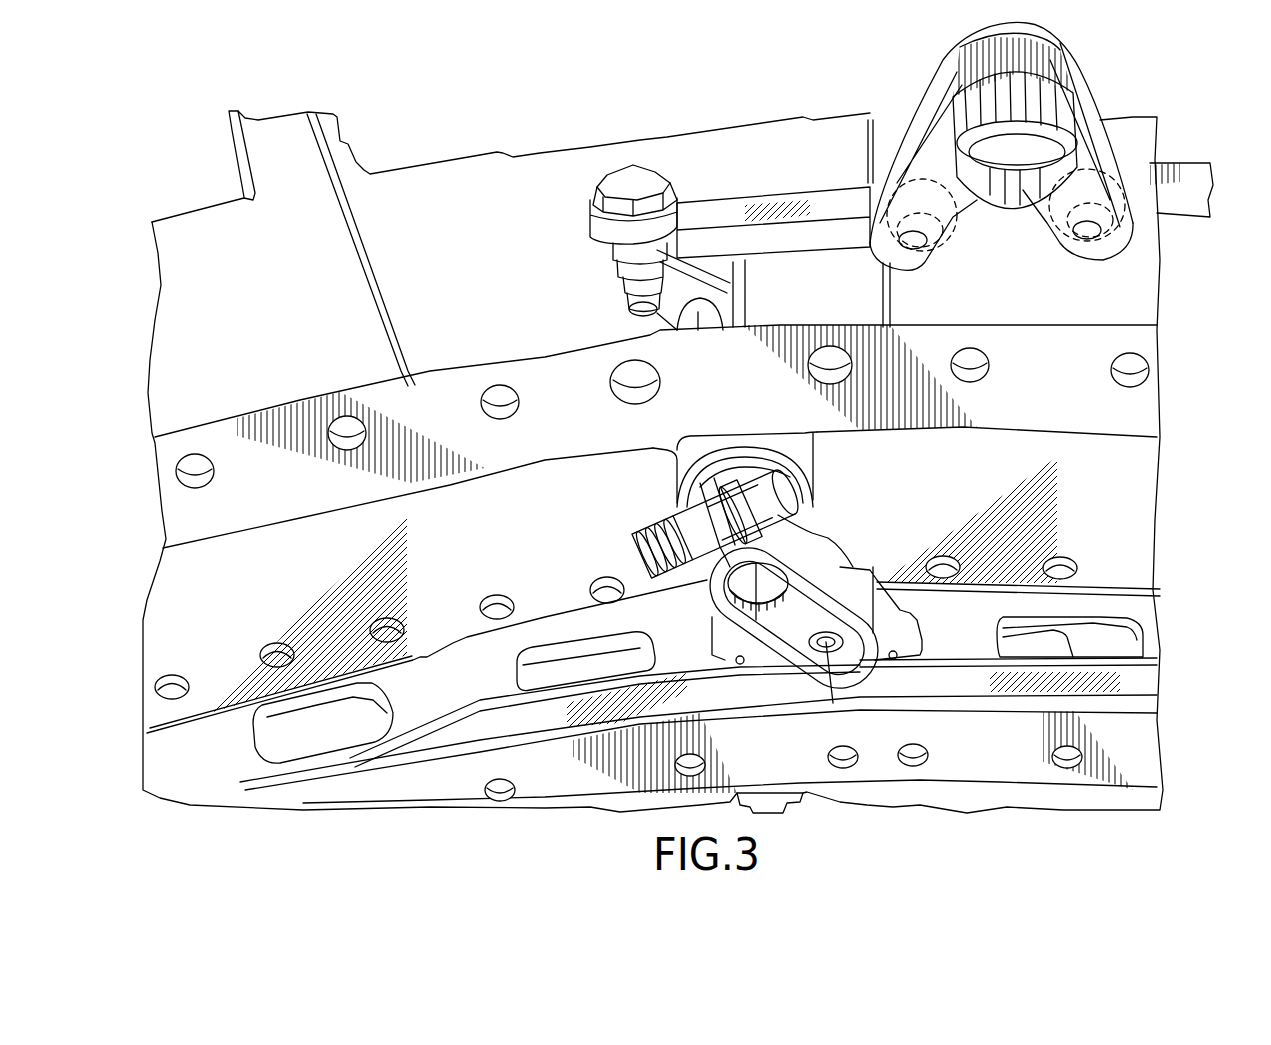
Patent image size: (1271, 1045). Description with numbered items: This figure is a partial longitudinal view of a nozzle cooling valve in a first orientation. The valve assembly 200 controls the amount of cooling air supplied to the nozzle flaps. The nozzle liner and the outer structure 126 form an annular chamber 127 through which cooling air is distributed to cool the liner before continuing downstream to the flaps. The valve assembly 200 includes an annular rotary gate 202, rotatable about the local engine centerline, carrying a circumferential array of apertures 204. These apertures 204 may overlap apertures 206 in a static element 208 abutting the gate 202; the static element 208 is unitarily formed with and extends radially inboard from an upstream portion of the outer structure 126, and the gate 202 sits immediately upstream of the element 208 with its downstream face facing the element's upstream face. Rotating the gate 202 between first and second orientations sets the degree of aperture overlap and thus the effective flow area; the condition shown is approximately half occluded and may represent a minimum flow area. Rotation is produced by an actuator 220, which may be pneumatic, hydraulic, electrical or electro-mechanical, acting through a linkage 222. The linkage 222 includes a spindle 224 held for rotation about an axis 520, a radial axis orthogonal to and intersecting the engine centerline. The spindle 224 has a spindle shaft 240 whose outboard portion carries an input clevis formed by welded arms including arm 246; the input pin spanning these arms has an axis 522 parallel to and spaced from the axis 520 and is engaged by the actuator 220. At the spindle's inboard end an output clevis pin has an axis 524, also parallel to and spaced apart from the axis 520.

The valve assembly 200 is at (490, 118).
The outer structure 126 is at (1178, 548).
The annular chamber 127 is at (1175, 573).
The annular rotary gate 202 is at (415, 722).
The apertures 204 is at (323, 707).
The apertures 206 is at (328, 747).
The static element 208 is at (360, 720).
The actuator 220 is at (1213, 225).
The linkage 222 is at (1105, 58).
The spindle 224 is at (748, 158).
The spindle shaft 240 is at (745, 310).
The arm 246 is at (670, 193).
The axis 520 is at (653, 537).
The axis 522 is at (622, 170).
The axis 524 is at (833, 703).